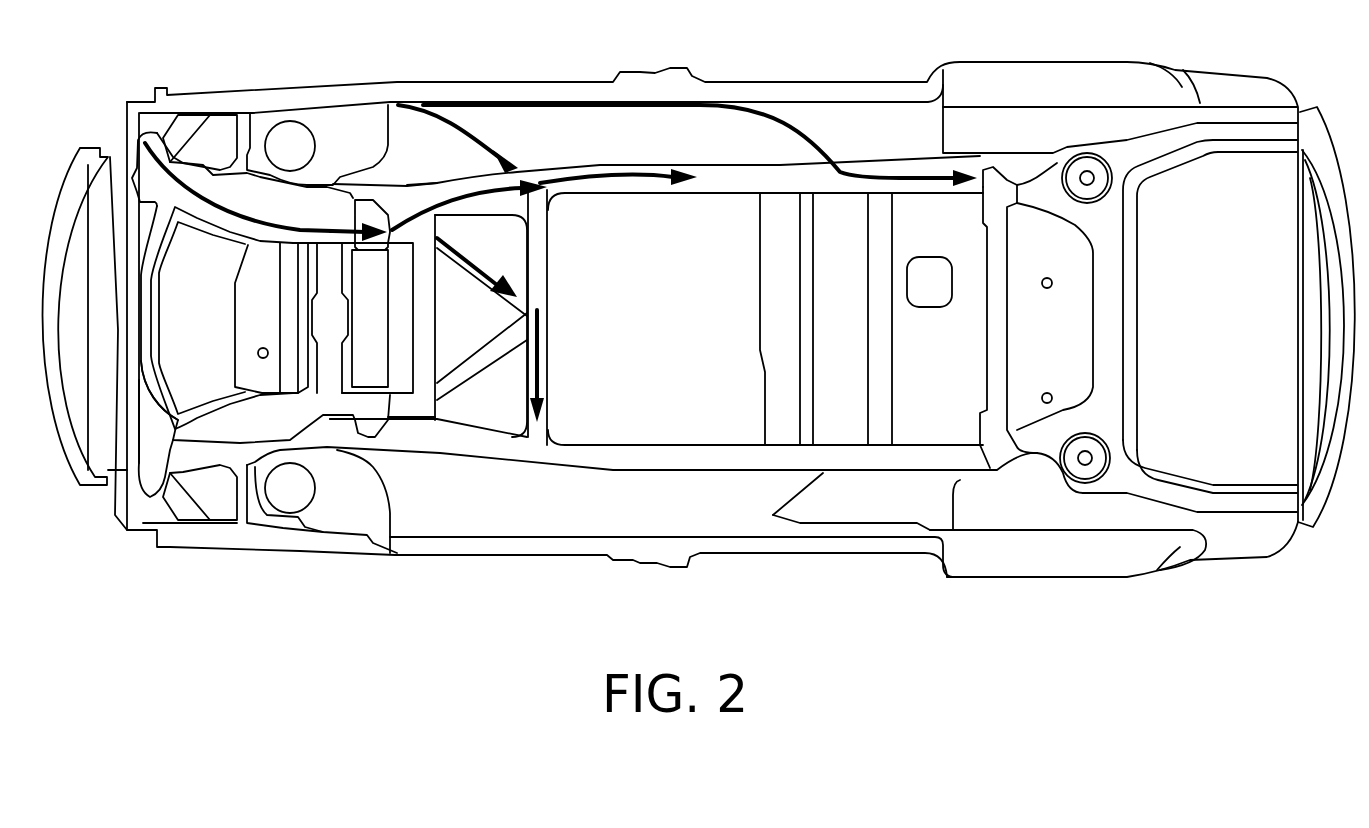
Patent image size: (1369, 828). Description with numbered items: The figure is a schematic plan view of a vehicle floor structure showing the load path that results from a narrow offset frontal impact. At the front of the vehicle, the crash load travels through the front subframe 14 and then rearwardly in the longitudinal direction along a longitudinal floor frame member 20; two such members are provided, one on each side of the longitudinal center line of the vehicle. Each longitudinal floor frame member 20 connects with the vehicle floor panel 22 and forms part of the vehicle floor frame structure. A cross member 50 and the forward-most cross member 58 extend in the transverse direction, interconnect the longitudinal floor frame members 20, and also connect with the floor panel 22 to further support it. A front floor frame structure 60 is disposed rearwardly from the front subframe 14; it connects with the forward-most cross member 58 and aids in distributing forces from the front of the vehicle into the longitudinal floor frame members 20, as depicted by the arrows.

The front subframe 14 is at (147, 492).
The longitudinal floor frame member 20 is at (630, 183).
The vehicle floor panel 22 is at (573, 513).
The cross member 50 is at (997, 265).
The forward-most cross member 58 is at (537, 278).
The front floor frame structure 60 is at (476, 430).